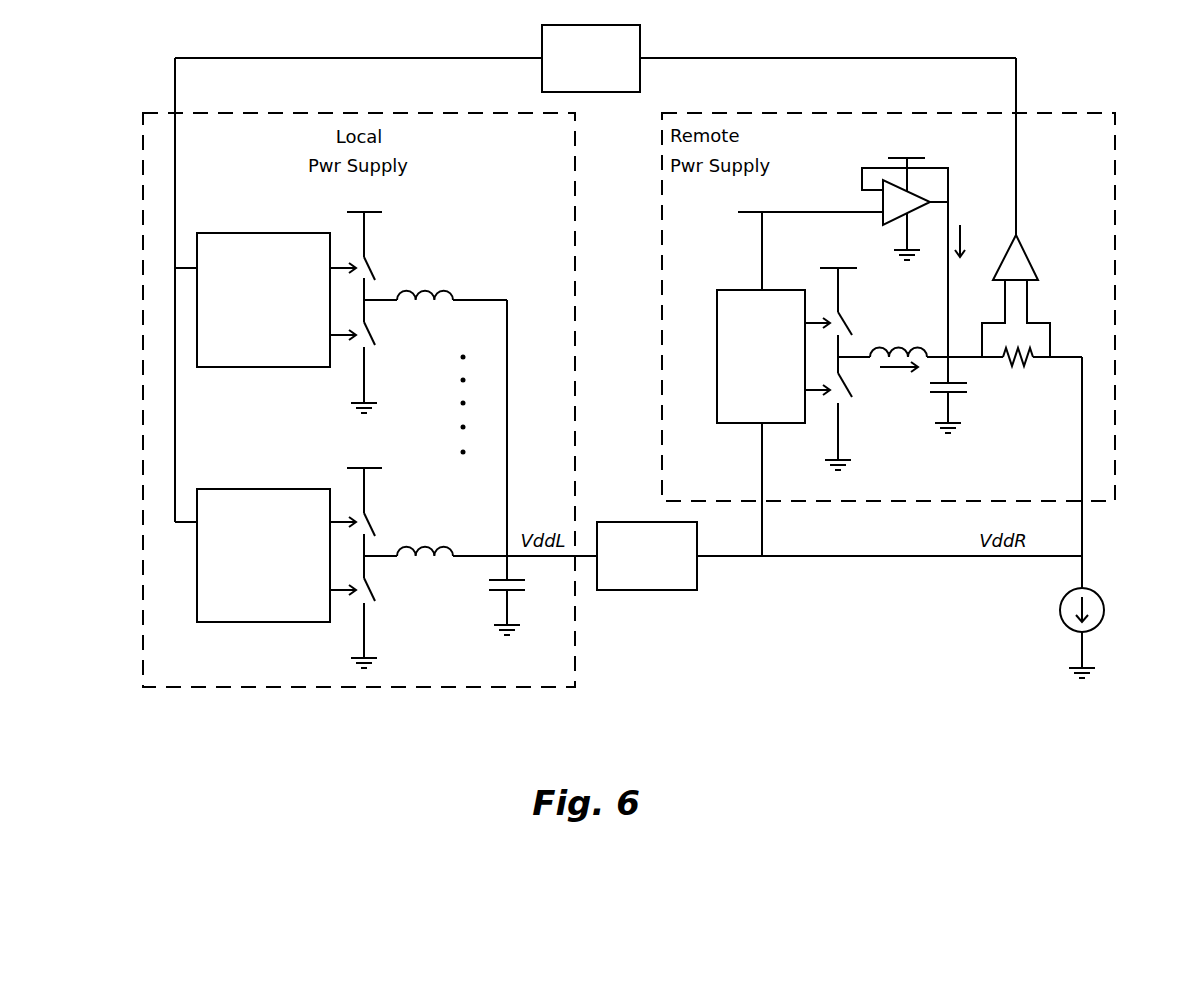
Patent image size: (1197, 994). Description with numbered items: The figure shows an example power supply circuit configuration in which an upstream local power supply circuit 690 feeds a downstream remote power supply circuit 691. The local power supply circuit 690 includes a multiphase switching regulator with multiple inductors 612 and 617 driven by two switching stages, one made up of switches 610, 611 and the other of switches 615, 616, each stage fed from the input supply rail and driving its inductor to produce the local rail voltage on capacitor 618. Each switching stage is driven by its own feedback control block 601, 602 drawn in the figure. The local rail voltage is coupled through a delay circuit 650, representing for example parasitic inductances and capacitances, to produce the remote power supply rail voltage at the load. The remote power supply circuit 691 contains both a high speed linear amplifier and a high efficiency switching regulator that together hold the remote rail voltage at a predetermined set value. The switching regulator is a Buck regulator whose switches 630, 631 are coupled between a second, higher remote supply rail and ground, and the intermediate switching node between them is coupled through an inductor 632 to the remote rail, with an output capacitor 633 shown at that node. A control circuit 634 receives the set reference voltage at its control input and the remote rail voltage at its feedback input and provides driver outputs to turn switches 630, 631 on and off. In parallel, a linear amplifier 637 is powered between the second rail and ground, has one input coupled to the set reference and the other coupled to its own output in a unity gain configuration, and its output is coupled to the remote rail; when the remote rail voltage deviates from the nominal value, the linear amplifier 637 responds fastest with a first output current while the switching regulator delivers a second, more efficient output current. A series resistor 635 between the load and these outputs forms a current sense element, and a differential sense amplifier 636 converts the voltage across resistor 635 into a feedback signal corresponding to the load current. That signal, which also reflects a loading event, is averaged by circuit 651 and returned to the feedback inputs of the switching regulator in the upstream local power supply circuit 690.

The local FB control circuit 601 is at (249, 363).
The local FB control circuit 602 is at (249, 616).
The switch 610 is at (376, 258).
The switch 611 is at (381, 368).
The inductor 612 is at (412, 283).
The switch 615 is at (379, 513).
The switch 616 is at (382, 624).
The inductor 617 is at (413, 539).
The capacitor 618 is at (529, 611).
The switch 630 is at (851, 311).
The switch 631 is at (851, 443).
The inductor 632 is at (919, 343).
The capacitor C 633 is at (1004, 410).
The control circuit 634 is at (746, 389).
The series resistor 635 is at (1063, 403).
The differential sense amplifier 636 is at (1033, 258).
The linear amplifier 637 is at (913, 230).
The delay circuit 650 is at (631, 586).
The averaging circuit 651 is at (575, 88).
The local power supply circuit 690 is at (575, 190).
The remote power supply circuit 691 is at (1115, 191).